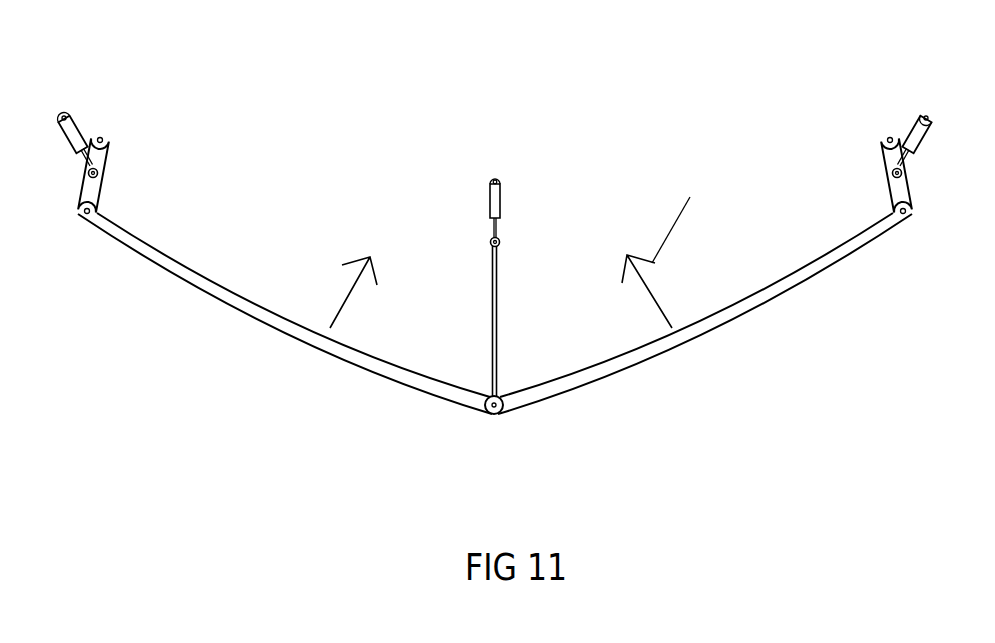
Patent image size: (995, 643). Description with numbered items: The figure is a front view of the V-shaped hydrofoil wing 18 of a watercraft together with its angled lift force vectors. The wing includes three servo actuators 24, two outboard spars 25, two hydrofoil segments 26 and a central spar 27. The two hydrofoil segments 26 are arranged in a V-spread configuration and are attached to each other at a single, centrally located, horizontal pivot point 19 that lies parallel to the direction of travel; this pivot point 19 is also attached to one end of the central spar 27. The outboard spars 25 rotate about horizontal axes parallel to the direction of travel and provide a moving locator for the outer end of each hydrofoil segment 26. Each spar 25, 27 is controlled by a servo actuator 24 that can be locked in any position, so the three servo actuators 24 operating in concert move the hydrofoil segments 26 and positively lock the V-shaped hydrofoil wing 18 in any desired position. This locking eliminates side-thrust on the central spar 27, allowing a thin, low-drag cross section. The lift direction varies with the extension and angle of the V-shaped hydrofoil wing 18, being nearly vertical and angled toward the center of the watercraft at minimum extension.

The V-shaped hydrofoil wing 18 is at (231, 371).
The pivot point 19 is at (485, 412).
The servo actuator 24 is at (918, 130).
The outboard spar 25 is at (893, 193).
The hydrofoil segment 26 is at (736, 316).
The central spar 27 is at (500, 282).